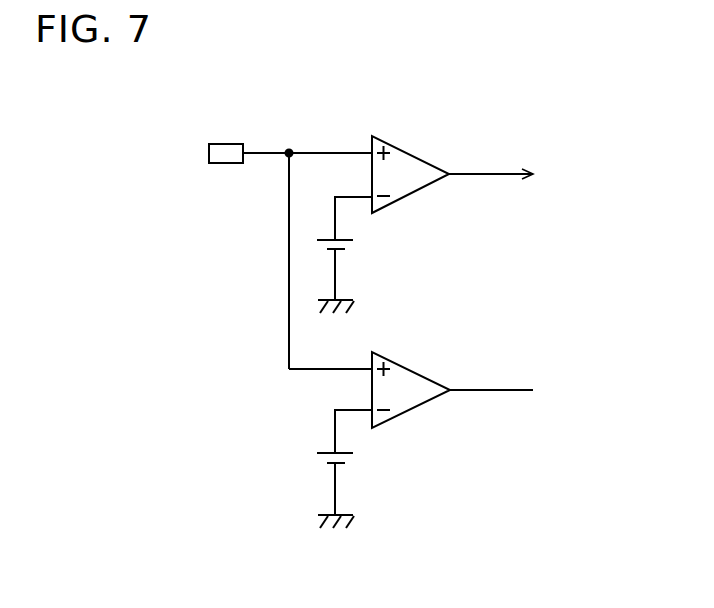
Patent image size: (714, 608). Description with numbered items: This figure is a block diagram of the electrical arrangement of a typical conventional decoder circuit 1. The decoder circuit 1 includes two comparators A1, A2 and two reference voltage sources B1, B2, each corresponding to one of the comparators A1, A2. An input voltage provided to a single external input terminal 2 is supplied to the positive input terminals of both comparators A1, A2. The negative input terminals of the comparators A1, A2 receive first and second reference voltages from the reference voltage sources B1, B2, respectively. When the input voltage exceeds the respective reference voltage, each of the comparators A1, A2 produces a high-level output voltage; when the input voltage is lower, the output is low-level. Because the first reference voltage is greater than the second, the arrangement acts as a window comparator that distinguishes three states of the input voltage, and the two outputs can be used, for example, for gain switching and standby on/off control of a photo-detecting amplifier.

The decoder circuit 1 is at (196, 104).
The external input terminal 2 is at (226, 165).
The comparator A1 is at (410, 152).
The comparator A2 is at (412, 368).
The reference voltage source B1 is at (325, 238).
The reference voltage source B2 is at (325, 452).